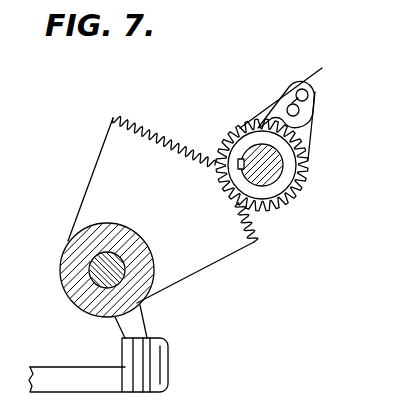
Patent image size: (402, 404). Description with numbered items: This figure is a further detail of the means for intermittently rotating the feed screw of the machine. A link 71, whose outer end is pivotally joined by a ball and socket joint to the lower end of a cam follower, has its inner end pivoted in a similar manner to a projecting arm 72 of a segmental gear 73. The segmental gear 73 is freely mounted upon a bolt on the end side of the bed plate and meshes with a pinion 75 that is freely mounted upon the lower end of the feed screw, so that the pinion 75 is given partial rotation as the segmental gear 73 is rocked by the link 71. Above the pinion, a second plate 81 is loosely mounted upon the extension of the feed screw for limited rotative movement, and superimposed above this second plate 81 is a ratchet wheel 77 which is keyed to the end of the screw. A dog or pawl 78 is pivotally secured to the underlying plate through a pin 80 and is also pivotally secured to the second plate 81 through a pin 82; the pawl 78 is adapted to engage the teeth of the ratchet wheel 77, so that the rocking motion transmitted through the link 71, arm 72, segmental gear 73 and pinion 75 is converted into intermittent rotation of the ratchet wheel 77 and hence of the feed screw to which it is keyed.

The link 71 is at (52, 366).
The projecting arm 72 is at (143, 317).
The segmental gear 73 is at (208, 265).
The pinion 75 is at (283, 180).
The ratchet wheel 77 is at (300, 178).
The dog or pawl 78 is at (268, 117).
The pin 80 is at (325, 79).
The second plate 81 is at (310, 127).
The pin 82 is at (299, 110).